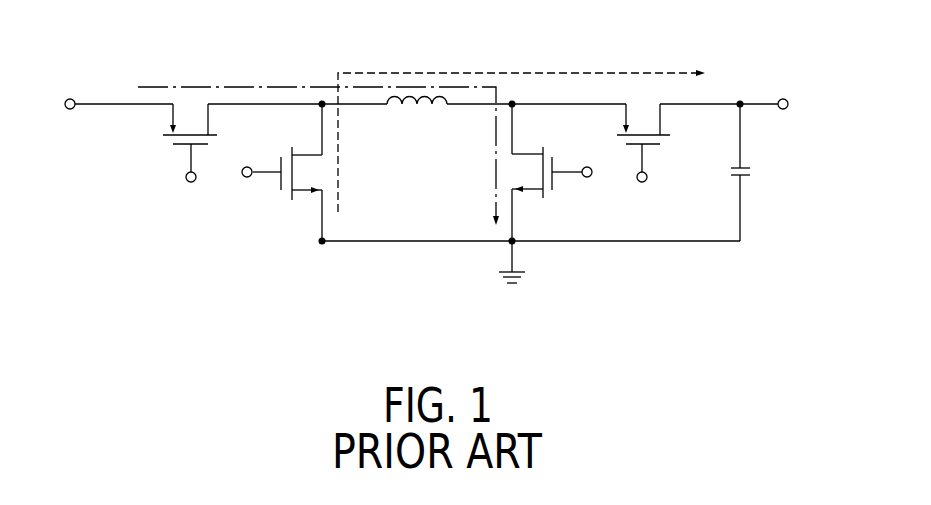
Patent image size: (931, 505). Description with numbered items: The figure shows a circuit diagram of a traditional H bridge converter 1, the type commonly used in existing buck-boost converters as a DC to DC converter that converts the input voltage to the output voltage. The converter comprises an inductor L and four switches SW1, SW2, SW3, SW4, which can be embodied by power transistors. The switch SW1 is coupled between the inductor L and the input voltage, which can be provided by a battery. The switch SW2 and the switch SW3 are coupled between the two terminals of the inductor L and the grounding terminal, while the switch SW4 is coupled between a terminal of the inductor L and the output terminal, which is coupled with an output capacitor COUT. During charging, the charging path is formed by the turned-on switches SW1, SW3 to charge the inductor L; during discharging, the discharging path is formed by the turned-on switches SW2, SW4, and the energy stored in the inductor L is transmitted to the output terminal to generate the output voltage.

The prior art buck-boost converter circuit 1 is at (78, 27).
The switch SW1 is at (169, 143).
The switch SW2 is at (282, 172).
The switch SW3 is at (552, 172).
The switch SW4 is at (663, 143).
The inductor L is at (417, 117).
The output capacitor COUT is at (770, 172).